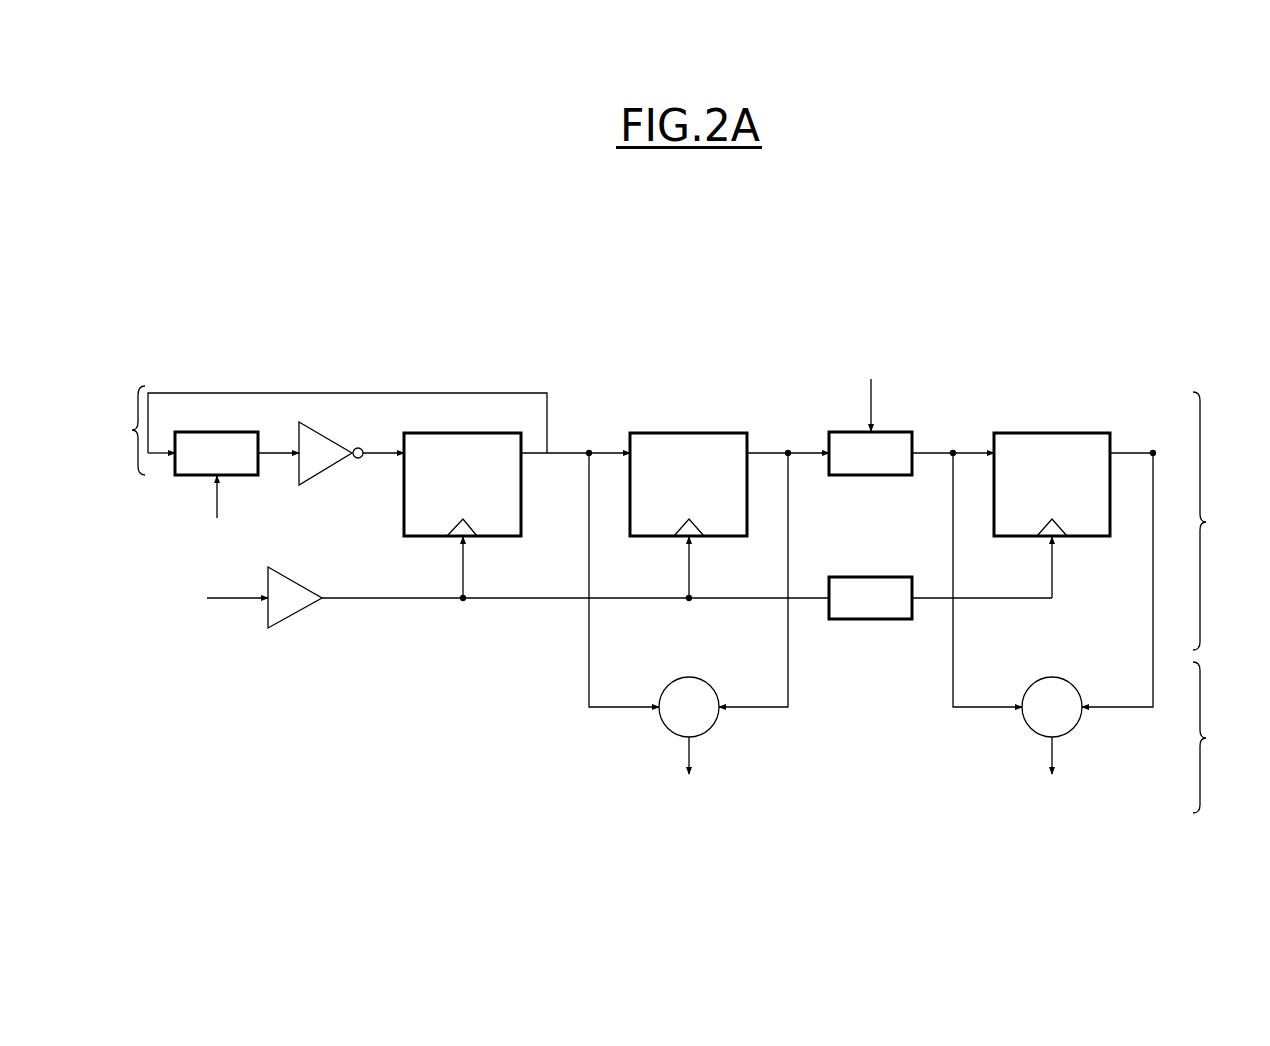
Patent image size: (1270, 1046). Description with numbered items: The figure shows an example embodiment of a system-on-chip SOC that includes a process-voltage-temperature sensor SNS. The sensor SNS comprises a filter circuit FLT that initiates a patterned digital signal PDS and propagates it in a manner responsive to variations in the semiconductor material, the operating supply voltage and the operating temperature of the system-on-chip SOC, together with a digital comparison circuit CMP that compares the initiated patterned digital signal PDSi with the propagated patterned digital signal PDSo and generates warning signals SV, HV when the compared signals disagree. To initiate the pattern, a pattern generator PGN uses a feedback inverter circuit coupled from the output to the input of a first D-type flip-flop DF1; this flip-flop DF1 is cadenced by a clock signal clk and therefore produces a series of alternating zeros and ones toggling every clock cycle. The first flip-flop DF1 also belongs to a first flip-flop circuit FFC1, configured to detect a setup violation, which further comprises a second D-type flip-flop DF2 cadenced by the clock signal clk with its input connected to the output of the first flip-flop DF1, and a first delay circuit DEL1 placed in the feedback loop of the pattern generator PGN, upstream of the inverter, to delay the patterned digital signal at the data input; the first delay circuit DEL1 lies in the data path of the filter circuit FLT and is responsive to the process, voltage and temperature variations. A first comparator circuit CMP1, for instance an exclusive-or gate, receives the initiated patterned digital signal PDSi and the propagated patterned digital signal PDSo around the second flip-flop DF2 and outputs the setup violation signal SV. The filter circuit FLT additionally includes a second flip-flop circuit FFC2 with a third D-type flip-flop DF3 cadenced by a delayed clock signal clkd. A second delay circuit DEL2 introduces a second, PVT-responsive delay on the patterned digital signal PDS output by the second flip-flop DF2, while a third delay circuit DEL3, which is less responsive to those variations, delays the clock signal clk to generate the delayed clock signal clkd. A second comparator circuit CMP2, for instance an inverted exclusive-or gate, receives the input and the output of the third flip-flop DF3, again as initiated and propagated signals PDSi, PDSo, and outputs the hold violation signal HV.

The system-on-chip SOC is at (118, 303).
The process-voltage-temperature sensor SNS is at (195, 351).
The patterned digital signal PDS is at (374, 391).
The pattern generator PGN is at (111, 430).
The first delay circuit DEL1 is at (215, 486).
The second delay circuit DEL2 is at (869, 414).
The third delay circuit DEL3 is at (870, 598).
The first D-type flip-flop DF1 is at (462, 515).
The second D-type flip-flop DF2 is at (688, 515).
The third D-type flip-flop DF3 is at (1052, 515).
The first flip-flop circuit FFC1 is at (685, 356).
The second flip-flop circuit FFC2 is at (1058, 356).
The initiated patterned digital signal PDSi is at (589, 450).
The propagated patterned digital signal PDSo is at (787, 450).
The clock signal clk is at (511, 597).
The delayed clock signal clkd is at (982, 586).
The first comparator circuit CMP1 is at (652, 726).
The second comparator circuit CMP2 is at (1014, 726).
The setup violation warning signal SV is at (689, 795).
The hold violation warning signal HV is at (1052, 795).
The filter circuit FLT is at (1219, 521).
The digital comparison circuit CMP is at (1226, 737).